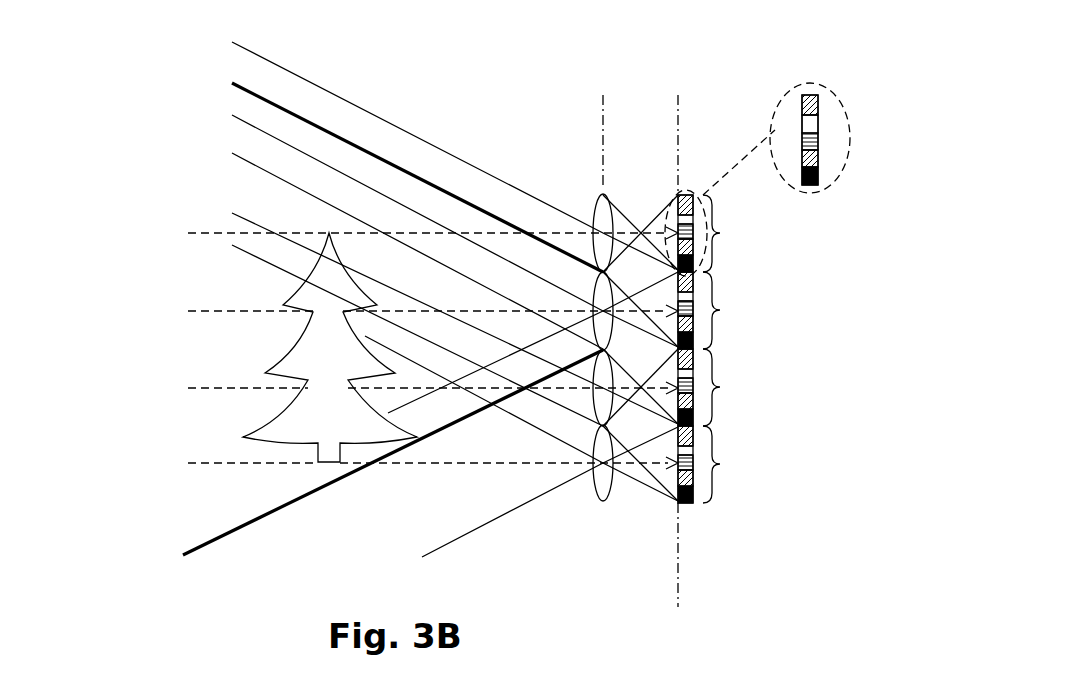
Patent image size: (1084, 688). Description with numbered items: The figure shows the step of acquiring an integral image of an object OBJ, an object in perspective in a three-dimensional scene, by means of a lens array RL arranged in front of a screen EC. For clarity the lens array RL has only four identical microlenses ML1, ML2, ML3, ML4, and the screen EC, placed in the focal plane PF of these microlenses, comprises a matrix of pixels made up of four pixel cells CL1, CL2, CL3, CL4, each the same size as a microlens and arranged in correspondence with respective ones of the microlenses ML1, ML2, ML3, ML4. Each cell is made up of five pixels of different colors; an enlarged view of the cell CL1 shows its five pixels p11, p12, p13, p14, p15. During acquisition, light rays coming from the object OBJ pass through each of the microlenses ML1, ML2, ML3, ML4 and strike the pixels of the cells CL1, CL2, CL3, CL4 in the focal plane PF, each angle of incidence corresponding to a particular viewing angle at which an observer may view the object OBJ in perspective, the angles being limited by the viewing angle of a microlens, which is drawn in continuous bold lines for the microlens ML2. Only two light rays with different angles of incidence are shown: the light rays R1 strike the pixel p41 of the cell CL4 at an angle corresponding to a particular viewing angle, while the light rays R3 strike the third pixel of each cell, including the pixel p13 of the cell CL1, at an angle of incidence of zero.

The lens array RL is at (598, 184).
The microlens ML1 is at (612, 193).
The microlens ML2 is at (586, 282).
The microlens ML3 is at (589, 400).
The microlens ML4 is at (617, 492).
The light rays R1 is at (258, 260).
The light rays R3 is at (186, 230).
The object OBJ is at (270, 348).
The focal plane PF is at (691, 190).
The pixel cell CL1 is at (800, 26).
The pixel cell CL2 is at (722, 310).
The pixel cell CL3 is at (722, 387).
The pixel cell CL4 is at (722, 464).
The screen EC is at (714, 184).
The pixel p11 is at (813, 108).
The pixel p12 is at (811, 124).
The pixel p13 is at (814, 141).
The pixel p14 is at (814, 159).
The pixel p15 is at (814, 177).
The pixel p41 is at (696, 429).